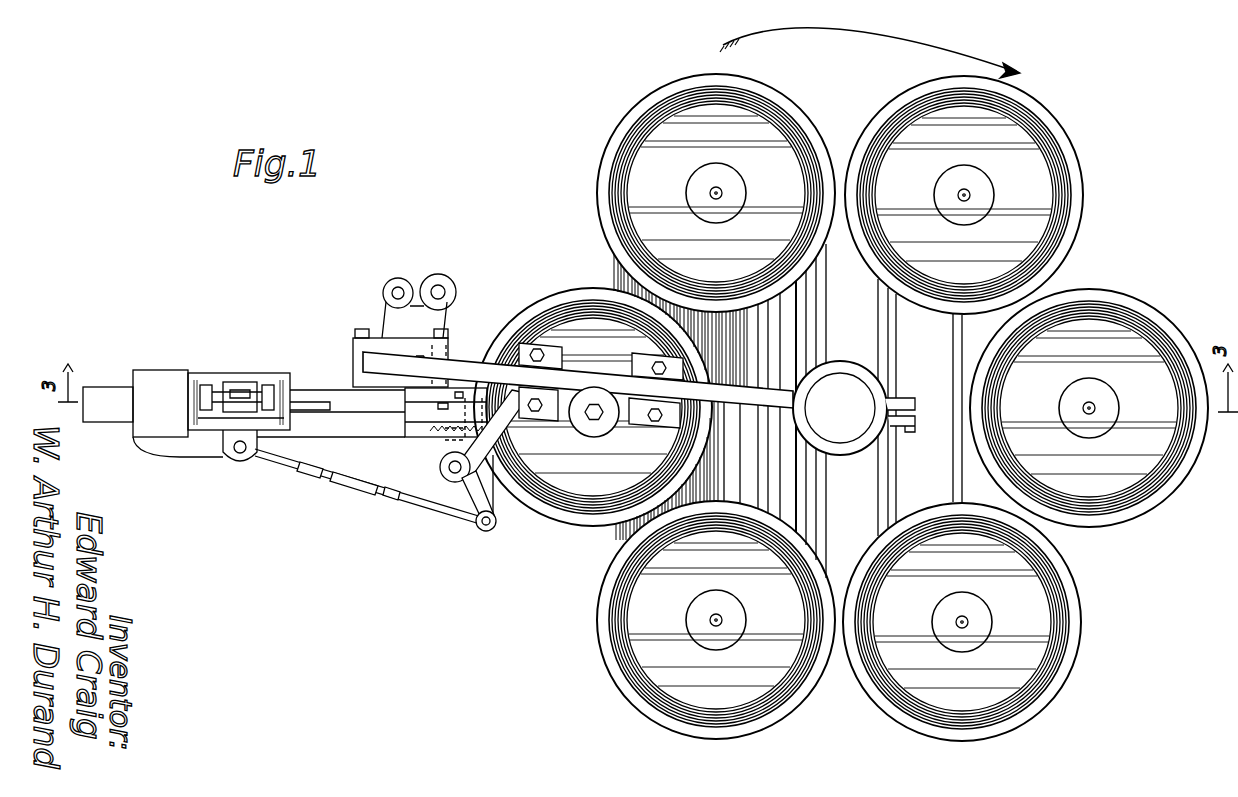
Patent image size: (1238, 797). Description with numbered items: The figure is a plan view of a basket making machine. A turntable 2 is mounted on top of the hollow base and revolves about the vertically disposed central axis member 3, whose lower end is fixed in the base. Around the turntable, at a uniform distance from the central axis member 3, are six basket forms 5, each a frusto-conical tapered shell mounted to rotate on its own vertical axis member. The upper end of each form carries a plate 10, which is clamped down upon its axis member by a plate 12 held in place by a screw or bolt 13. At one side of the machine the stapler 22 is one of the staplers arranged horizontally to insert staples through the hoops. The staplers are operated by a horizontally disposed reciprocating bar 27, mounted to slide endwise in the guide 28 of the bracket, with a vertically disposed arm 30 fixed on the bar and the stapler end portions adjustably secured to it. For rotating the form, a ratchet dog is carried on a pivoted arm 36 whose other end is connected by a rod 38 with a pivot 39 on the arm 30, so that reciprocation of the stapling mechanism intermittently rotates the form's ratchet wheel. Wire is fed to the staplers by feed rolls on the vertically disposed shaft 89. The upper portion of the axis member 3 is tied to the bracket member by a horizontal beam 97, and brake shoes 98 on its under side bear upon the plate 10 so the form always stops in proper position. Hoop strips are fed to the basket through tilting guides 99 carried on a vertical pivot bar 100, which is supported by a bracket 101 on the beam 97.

The turntable 2 is at (788, 411).
The axis member 3 is at (854, 408).
The basket form 5 is at (766, 108).
The plate 10 is at (547, 537).
The plate 12 is at (721, 216).
The screw or bolt 13 is at (722, 193).
The stapler 22 is at (428, 412).
The reciprocating bar 27 is at (107, 393).
The guide 28 is at (163, 375).
The arm 30 is at (222, 417).
The arm 36 is at (495, 530).
The rod 38 is at (307, 478).
The pivot 39 is at (240, 455).
The shaft 89 is at (440, 285).
The horizontal beam 97 is at (592, 378).
The brake shoe 98 is at (524, 348).
The guide 99 is at (483, 494).
The pivot bar 100 is at (452, 472).
The bracket 101 is at (470, 408).